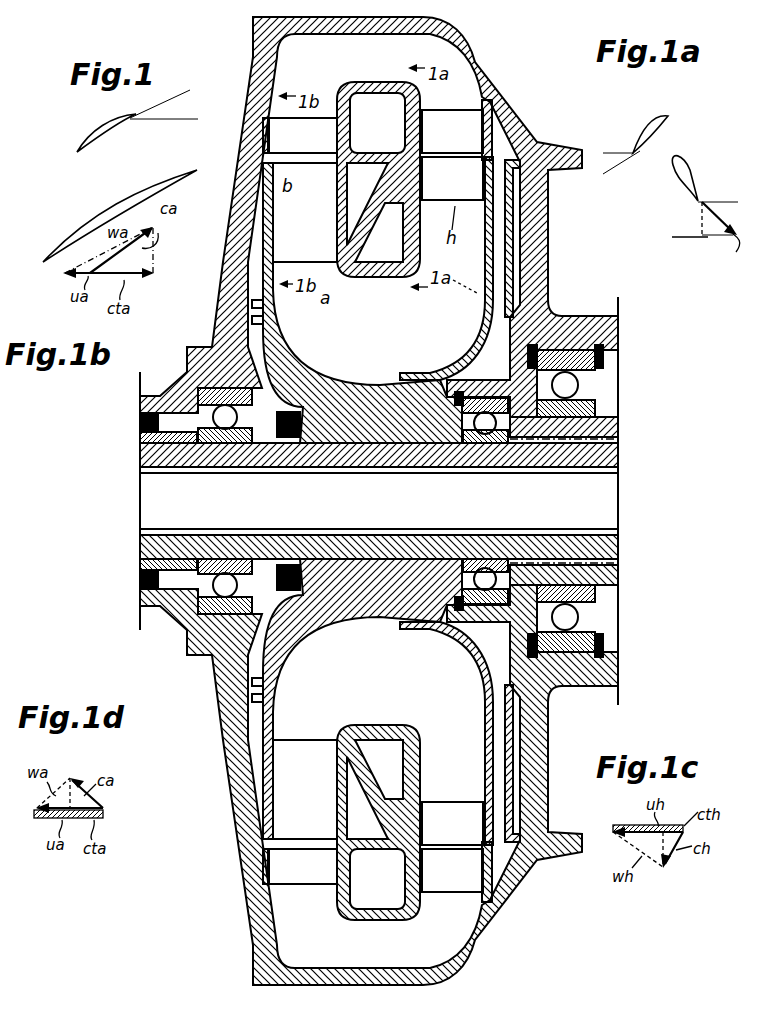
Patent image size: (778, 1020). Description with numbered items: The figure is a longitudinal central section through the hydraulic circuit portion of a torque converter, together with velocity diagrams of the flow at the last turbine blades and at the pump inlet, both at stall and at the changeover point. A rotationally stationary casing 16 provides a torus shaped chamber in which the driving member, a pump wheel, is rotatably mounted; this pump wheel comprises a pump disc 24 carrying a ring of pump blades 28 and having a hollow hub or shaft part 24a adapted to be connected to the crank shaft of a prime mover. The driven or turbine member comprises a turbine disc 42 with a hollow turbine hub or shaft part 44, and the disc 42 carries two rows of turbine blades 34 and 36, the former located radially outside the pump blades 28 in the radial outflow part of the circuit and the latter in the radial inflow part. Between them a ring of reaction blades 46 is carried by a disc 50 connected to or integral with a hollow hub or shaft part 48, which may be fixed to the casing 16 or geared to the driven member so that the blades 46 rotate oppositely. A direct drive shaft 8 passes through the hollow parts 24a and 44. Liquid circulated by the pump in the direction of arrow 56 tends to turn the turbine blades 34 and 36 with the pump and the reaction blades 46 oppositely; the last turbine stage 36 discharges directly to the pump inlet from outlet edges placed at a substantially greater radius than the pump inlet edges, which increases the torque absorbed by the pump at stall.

In FIG. 1, the direct drive shaft 8 is at (150, 480).
In FIG. 1, the casing 16 is at (247, 100).
In FIG. 1, the pump disc 24 is at (278, 332).
In FIG. 1, the hollow hub or shaft part 24a is at (147, 452).
In FIG. 1, the pump blades 28 is at (315, 172).
In FIG. 1B, the pump blades 28 is at (114, 208).
In FIG. 1, the turbine blades 34 is at (300, 135).
In FIG. 1B, the turbine blades 34 is at (117, 128).
In FIG. 1, the turbine blades 36 is at (452, 178).
In FIG. 1A, the turbine blades 36 is at (692, 182).
In FIG. 1, the turbine disc 42 is at (482, 318).
In FIG. 1, the hollow turbine hub or shaft part 44 is at (603, 463).
In FIG. 1, the reaction blades 46 is at (452, 131).
In FIG. 1A, the reaction blades 46 is at (641, 120).
In FIG. 1, the hollow hub or shaft part 48 is at (603, 430).
In FIG. 1, the disc 50 is at (513, 258).
In FIG. 1, the arrow 56 is at (340, 292).